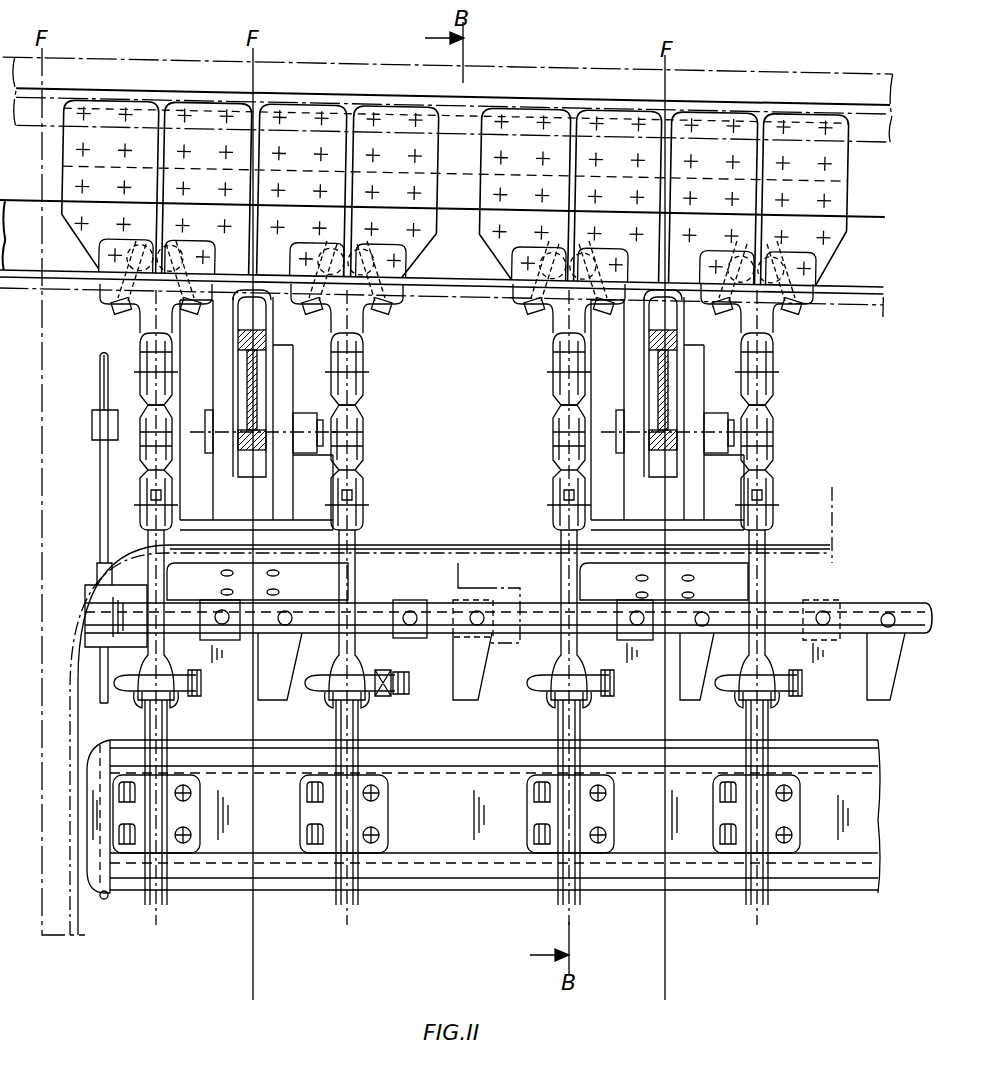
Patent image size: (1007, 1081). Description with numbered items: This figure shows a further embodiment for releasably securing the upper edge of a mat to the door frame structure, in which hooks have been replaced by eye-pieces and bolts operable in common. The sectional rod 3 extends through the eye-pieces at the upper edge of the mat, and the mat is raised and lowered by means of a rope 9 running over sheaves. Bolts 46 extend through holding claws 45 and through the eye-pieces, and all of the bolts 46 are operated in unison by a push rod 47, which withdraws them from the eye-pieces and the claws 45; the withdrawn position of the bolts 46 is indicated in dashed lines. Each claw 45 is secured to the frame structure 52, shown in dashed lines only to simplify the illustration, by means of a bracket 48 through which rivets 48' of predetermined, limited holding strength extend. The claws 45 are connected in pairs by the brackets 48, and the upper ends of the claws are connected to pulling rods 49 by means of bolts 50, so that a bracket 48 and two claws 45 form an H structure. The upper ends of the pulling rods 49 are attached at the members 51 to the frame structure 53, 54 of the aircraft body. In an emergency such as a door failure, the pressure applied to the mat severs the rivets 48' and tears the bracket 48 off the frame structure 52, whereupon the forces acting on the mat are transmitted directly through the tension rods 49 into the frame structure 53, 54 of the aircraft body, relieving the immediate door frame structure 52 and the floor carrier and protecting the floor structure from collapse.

The sectional rod 3 is at (828, 892).
The rope 9 is at (103, 546).
The holding claw 45 is at (190, 668).
The bolt 46 is at (133, 692).
The push rod 47 is at (853, 607).
The bracket 48 is at (486, 580).
The rivet 48' is at (642, 585).
The pulling rod 49 is at (363, 443).
The bolt 50 is at (776, 513).
The upper clevis 51 is at (140, 350).
The frame structure 52 is at (456, 577).
The frame structure of the aircraft body 53 is at (594, 318).
The frame structure of the aircraft body 54 is at (591, 118).